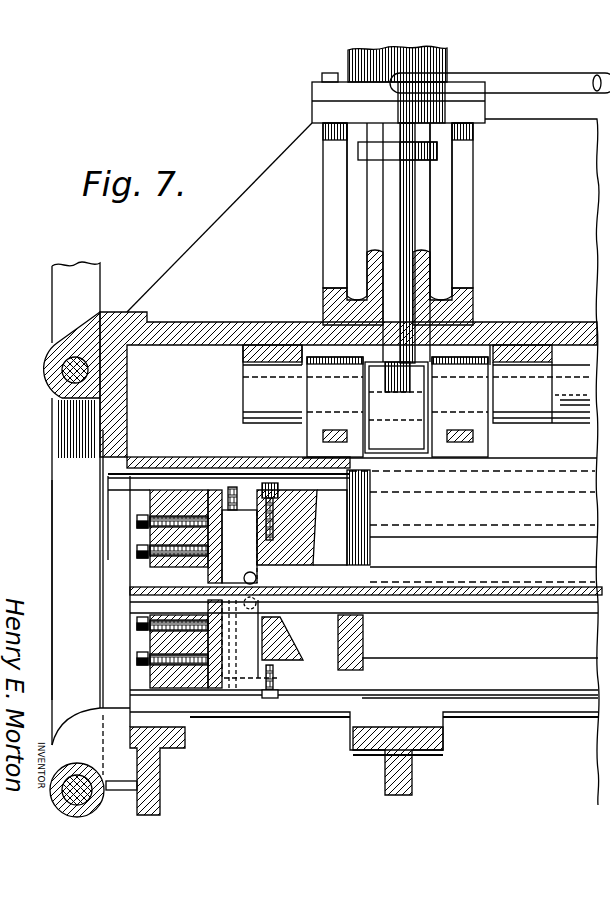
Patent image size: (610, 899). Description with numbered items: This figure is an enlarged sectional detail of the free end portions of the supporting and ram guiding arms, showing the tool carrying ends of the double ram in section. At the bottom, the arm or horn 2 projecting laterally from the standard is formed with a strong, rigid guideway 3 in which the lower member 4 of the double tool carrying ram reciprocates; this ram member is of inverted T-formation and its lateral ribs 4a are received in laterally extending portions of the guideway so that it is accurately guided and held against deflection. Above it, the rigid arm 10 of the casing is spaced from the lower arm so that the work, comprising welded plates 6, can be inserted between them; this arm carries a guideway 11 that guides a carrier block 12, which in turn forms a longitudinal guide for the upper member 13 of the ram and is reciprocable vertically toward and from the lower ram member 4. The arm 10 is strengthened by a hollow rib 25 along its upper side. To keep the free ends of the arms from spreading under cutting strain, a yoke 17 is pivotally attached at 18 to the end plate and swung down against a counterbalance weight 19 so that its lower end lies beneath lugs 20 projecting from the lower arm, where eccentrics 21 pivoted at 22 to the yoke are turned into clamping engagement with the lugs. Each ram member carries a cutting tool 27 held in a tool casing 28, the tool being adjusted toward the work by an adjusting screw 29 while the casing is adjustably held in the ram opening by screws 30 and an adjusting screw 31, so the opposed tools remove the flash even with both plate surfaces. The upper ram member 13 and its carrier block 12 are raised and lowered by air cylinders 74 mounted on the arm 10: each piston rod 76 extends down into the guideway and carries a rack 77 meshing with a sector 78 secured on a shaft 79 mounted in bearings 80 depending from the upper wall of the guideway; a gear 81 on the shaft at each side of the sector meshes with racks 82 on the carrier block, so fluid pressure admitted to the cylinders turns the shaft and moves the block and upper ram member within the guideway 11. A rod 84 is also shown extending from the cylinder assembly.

The arm or horn 2 is at (412, 786).
The guideway 3 is at (140, 682).
The lower member of the double tool carrying ram 4 is at (364, 623).
The lateral ribs 4a is at (490, 684).
The plates 6 is at (136, 586).
The arm 10 is at (201, 322).
The guideway 11 is at (582, 443).
The carrier block 12 is at (162, 458).
The upper member of the double ram 13 is at (260, 579).
The yoke 17 is at (58, 498).
The pivot 18 is at (63, 367).
The counterbalance weight 19 is at (57, 301).
The lugs 20 is at (70, 727).
The eccentrics 21 is at (145, 785).
The pivot 22 is at (84, 792).
The hollow rib 25 is at (262, 180).
The cutting tool 27 is at (296, 631).
The tool casing 28 is at (210, 490).
The adjusting screw 29 is at (233, 487).
The screws 30 is at (137, 550).
The adjusting screw 31 is at (271, 483).
The air cylinders 74 is at (447, 63).
The piston rod 76 is at (406, 215).
The rack 77 is at (396, 398).
The sector 78 is at (476, 324).
The shaft 79 is at (574, 407).
The bearings 80 is at (262, 365).
The gear 81 is at (316, 330).
The racks 82 is at (397, 407).
The handle rod 84 is at (535, 83).